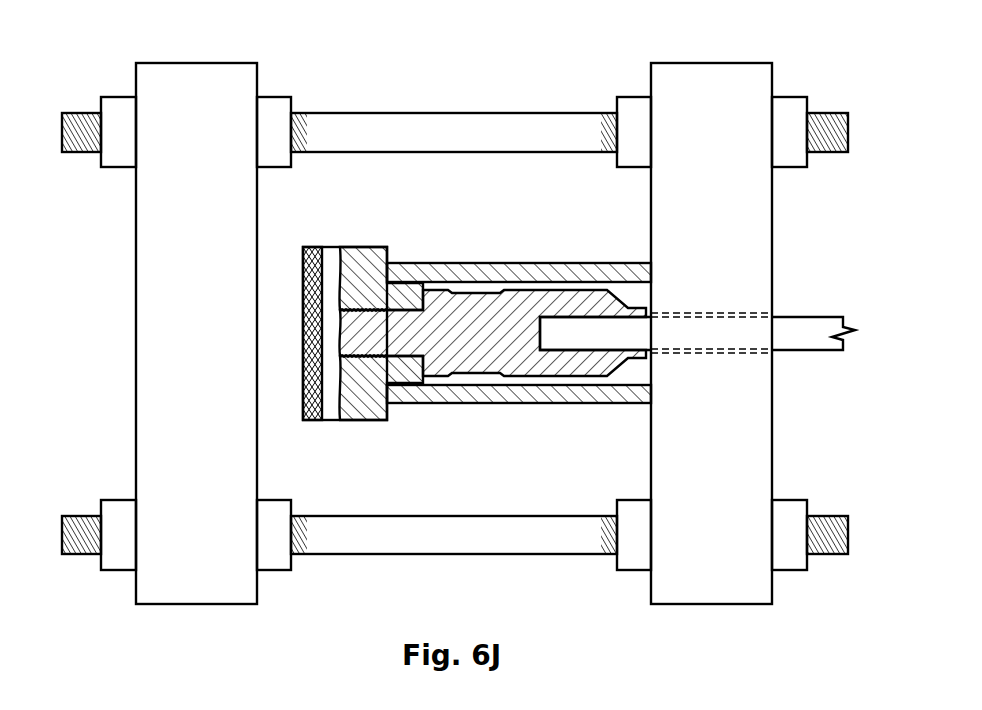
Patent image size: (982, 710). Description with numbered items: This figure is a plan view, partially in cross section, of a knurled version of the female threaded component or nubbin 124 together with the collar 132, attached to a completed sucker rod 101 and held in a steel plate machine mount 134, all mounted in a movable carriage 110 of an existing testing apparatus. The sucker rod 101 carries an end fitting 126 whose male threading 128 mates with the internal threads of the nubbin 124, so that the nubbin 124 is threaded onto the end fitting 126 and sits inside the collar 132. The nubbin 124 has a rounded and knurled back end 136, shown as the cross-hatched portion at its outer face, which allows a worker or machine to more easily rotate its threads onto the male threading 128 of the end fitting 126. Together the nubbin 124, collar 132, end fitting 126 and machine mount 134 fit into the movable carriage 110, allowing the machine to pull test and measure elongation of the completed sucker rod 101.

The shaft 101 is at (792, 317).
The movable carriage 110 is at (185, 80).
The nubbin 124 is at (362, 420).
The end fitting 126 is at (485, 300).
The male threading 128 is at (366, 312).
The collar 132 is at (592, 403).
The machine mount 134 is at (703, 85).
The knurled back end 136 is at (312, 262).